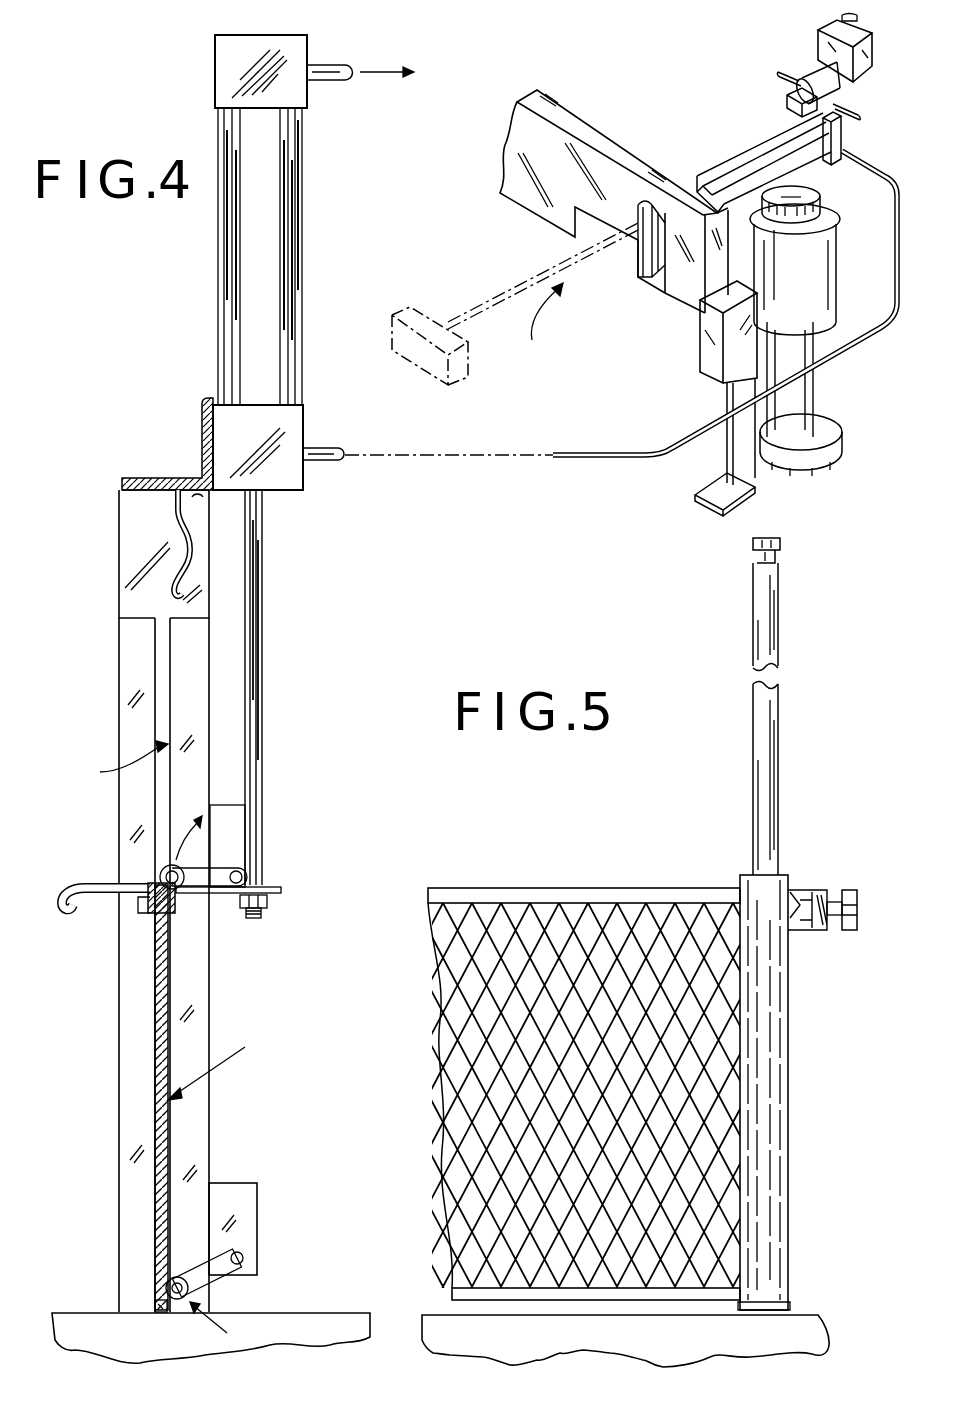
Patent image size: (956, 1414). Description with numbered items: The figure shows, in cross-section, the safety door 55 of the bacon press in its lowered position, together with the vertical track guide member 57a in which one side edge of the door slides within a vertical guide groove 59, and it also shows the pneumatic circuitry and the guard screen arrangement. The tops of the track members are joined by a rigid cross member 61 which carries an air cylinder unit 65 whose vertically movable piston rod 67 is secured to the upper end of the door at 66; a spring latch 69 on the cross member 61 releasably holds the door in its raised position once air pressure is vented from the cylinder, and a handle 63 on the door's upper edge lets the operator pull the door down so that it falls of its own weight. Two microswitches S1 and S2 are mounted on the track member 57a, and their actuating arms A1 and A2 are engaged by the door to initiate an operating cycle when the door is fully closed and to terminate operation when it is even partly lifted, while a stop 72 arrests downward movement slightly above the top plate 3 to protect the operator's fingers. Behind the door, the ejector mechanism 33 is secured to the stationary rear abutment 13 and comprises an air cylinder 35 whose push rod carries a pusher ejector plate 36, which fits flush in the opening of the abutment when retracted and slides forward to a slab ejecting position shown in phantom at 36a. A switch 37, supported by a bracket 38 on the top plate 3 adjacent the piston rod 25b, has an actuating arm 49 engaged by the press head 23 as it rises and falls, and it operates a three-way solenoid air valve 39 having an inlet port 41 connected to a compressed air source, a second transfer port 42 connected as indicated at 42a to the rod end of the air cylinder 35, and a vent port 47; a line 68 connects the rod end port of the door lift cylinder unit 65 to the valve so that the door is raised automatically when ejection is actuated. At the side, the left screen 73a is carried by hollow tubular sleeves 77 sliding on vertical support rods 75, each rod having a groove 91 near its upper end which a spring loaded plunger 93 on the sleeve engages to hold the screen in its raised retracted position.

In FIG. 4, the air cylinder unit 65 is at (302, 265).
In FIG. 4, the cross member 61 is at (202, 440).
In FIG. 4, the spring latch 69 is at (170, 538).
In FIG. 4, the track guide member 57a is at (119, 690).
In FIG. 4, the vertical guide groove 59 is at (119, 764).
In FIG. 4, the piston rod 67 is at (262, 722).
In FIG. 4, the microswitch S1 is at (232, 803).
In FIG. 4, the actuating arm A1 is at (215, 872).
In FIG. 4, the handle 63 is at (100, 905).
In FIG. 4, the piston rod connection to door 66 is at (282, 895).
In FIG. 4, the safety door 55 is at (212, 1096).
In FIG. 4, the microswitch S2 is at (257, 1225).
In FIG. 4, the actuating arm A2 is at (215, 1285).
In FIG. 4, the top plate 3 is at (340, 1312).
In FIG. 4, the stop 72 is at (160, 1306).
In FIG. 4, the rear abutment 13 is at (578, 108).
In FIG. 4, the pusher ejector plate 36 is at (622, 260).
In FIG. 4, the striker block (phantom position) 36a is at (440, 296).
In FIG. 4, the ejector mechanism 33 is at (549, 324).
In FIG. 4, the air cylinder 35 is at (720, 172).
In FIG. 4, the connection of second transfer port 42a is at (732, 152).
In FIG. 4, the second transfer port 42 is at (797, 105).
In FIG. 4, the inlet port 41 is at (845, 107).
In FIG. 4, the vent port 47 is at (797, 78).
In FIG. 4, the three-way solenoid air valve 39 is at (870, 45).
In FIG. 4, the press head 23 is at (837, 265).
In FIG. 4, the piston rod 25b is at (815, 393).
In FIG. 4, the bracket 38 is at (760, 476).
In FIG. 4, the switch 37 is at (700, 358).
In FIG. 4, the line 68 is at (622, 458).
In FIG. 4, the actuating arm 49 is at (822, 332).
In FIG. 5, the groove 91 is at (780, 552).
In FIG. 5, the vertical support rod 75 is at (778, 740).
In FIG. 5, the tubular sleeve 77 is at (790, 1100).
In FIG. 5, the spring loaded plunger 93 is at (890, 870).
In FIG. 5, the left screen 73a is at (589, 884).